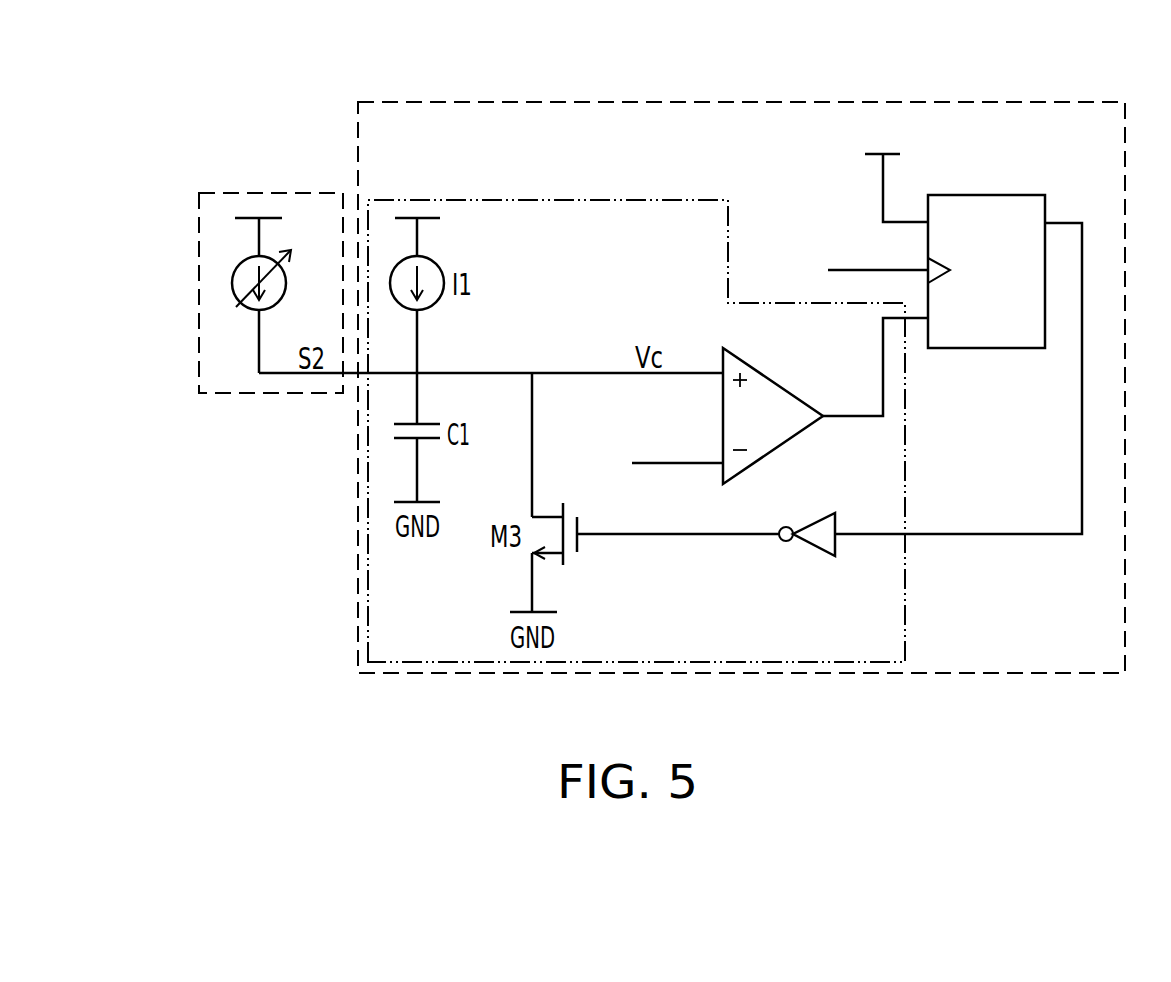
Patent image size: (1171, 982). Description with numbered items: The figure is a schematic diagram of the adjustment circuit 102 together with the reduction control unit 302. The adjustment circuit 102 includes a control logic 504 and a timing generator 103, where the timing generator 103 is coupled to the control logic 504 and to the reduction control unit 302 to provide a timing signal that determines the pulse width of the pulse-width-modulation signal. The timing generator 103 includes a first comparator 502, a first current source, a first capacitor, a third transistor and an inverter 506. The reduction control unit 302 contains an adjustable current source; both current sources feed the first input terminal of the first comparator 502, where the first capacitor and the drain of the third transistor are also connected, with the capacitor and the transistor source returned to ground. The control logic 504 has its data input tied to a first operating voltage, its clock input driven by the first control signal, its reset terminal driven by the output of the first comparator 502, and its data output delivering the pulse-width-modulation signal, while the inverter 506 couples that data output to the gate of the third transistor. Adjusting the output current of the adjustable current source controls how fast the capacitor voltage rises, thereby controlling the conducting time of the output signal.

The adjustment circuit 102 is at (1072, 102).
The timing generator 103 is at (572, 200).
The reduction control unit 302 is at (270, 193).
The first comparator 502 is at (776, 380).
The control logic 504 is at (987, 195).
The inverter 506 is at (813, 547).